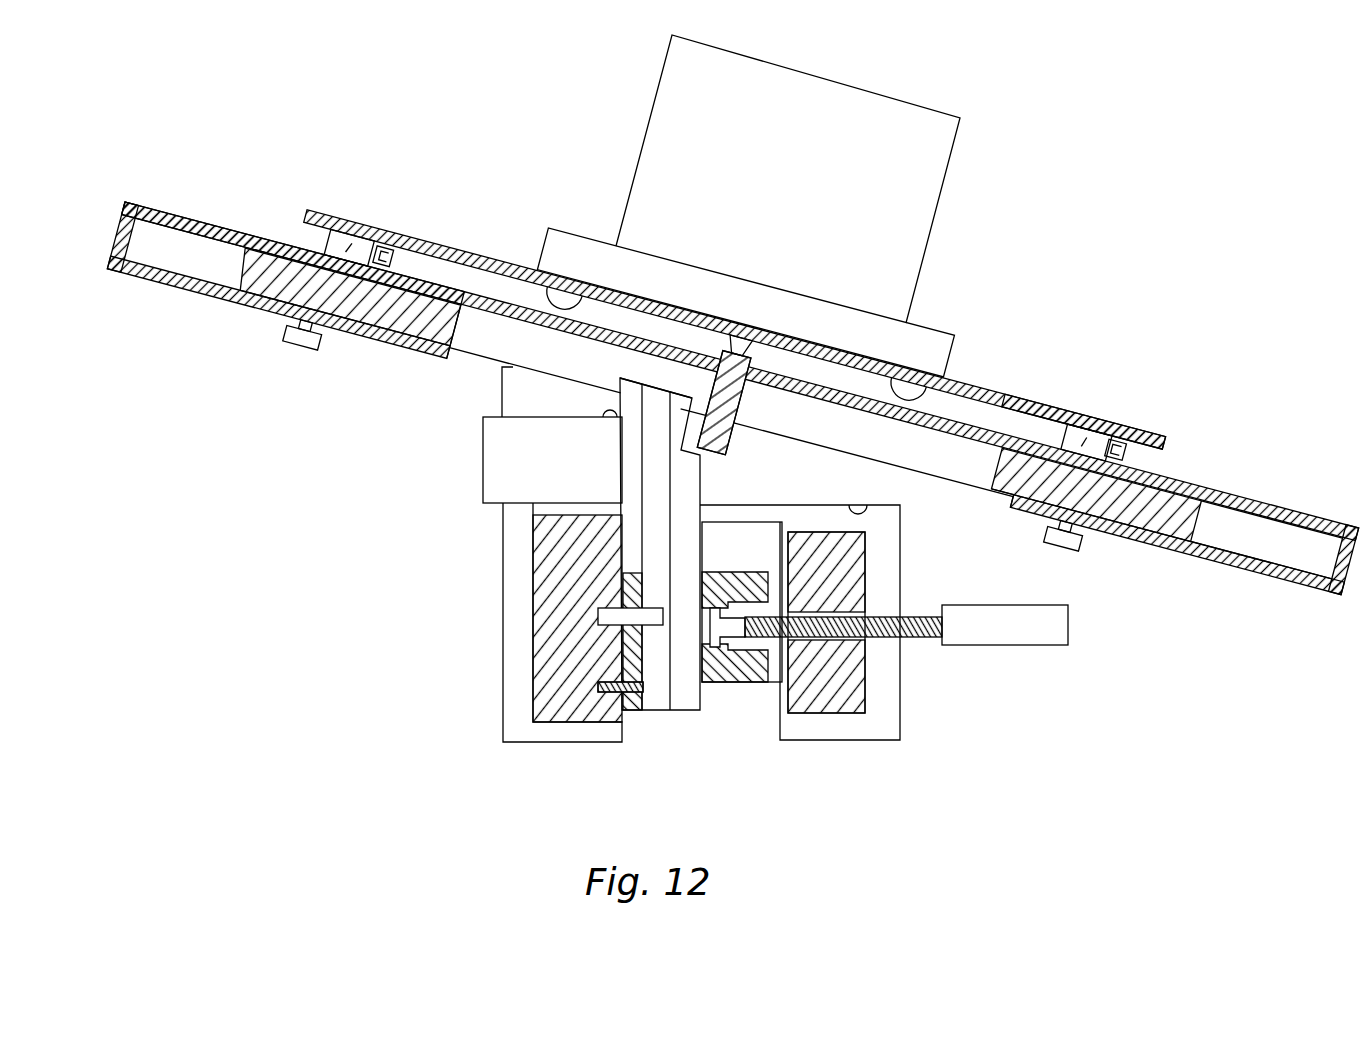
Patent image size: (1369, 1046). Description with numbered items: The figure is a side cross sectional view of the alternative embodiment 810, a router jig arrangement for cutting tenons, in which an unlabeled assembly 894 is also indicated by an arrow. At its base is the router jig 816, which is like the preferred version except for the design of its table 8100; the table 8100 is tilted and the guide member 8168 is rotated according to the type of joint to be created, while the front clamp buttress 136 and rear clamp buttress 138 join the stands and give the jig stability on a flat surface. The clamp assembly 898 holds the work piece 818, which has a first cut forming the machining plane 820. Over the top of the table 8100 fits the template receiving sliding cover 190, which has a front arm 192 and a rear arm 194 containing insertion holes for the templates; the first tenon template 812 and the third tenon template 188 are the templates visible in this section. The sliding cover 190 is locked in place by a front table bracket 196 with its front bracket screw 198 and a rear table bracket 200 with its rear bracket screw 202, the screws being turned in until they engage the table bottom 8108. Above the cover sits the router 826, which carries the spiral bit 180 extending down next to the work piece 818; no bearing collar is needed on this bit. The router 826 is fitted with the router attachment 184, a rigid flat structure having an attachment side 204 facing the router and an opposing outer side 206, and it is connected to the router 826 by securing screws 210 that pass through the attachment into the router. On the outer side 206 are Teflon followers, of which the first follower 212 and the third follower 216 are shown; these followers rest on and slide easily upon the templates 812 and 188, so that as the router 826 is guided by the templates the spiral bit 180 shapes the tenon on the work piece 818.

The alternative embodiment 810 is at (1112, 223).
The router 826 is at (815, 155).
The rear table bracket 200 is at (123, 205).
The rear arm 194 is at (188, 217).
The template receiving sliding cover 190 is at (253, 232).
The first tenon template 812 is at (377, 227).
The first follower 212 is at (386, 246).
The securing screws 210 is at (568, 297).
The machining plane 820 is at (653, 387).
The attachment side 204 is at (987, 383).
The third tenon template 188 is at (1093, 443).
The third follower 216 is at (1125, 440).
The router attachment 184 is at (1160, 440).
The front arm 192 is at (1165, 480).
The outer side 206 is at (490, 300).
The work piece 818 is at (663, 503).
The spiral bit 180 is at (722, 420).
The motor housing 894 is at (435, 481).
The front table bracket 196 is at (1015, 500).
The front bracket screw 198 is at (1062, 540).
The rear clamp buttress 138 is at (565, 605).
The table bottom 8108 is at (1153, 540).
The table 8100 is at (1200, 527).
The guide member 8168 is at (627, 640).
The front clamp buttress 136 is at (835, 693).
The clamp assembly 898 is at (968, 690).
The router jig 816 is at (455, 710).
The rear bracket screw 202 is at (291, 342).